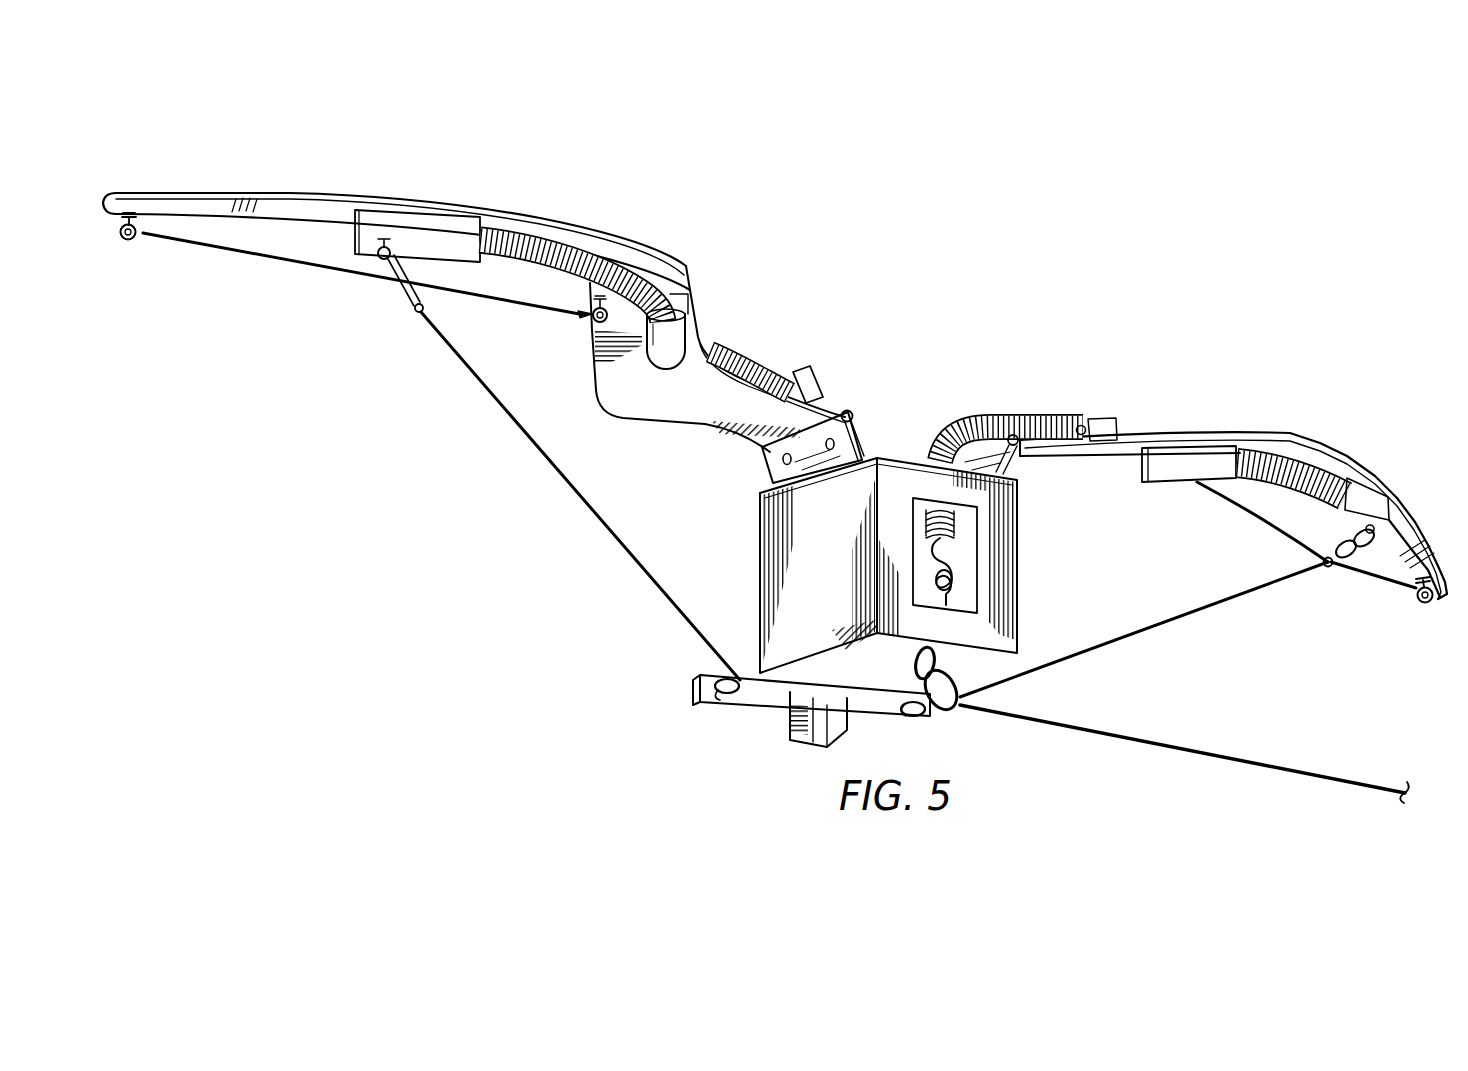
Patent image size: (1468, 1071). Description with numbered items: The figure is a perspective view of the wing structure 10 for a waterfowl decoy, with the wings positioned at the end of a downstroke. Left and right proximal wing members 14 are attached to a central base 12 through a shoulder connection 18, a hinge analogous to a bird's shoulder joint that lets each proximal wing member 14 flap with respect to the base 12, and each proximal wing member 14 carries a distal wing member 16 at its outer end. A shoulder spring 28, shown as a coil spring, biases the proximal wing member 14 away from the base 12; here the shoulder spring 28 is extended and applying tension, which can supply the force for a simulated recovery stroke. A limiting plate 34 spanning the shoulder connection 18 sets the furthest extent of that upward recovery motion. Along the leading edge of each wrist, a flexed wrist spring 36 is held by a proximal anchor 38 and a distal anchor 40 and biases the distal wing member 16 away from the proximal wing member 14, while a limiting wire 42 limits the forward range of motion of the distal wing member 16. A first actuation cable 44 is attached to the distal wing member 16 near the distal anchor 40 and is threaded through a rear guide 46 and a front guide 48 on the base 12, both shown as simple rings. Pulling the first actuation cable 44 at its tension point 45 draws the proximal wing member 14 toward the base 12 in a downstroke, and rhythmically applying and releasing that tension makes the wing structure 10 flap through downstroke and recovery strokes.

The wing structure 10 is at (964, 304).
The base 12 is at (990, 578).
The proximal wing member 14 is at (664, 420).
The distal wing member 16 is at (300, 191).
The shoulder connection 18 is at (866, 410).
The shoulder spring 28 is at (752, 360).
The limiting plate 34 is at (822, 387).
The wrist spring 36 is at (553, 227).
The proximal anchor 38 is at (680, 357).
The distal anchor 40 is at (360, 265).
The limiting wire 42 is at (248, 257).
The first actuation cable 44 is at (582, 502).
The tension point 45 is at (1260, 763).
The rear guide 46 is at (742, 706).
The front guide 48 is at (946, 717).